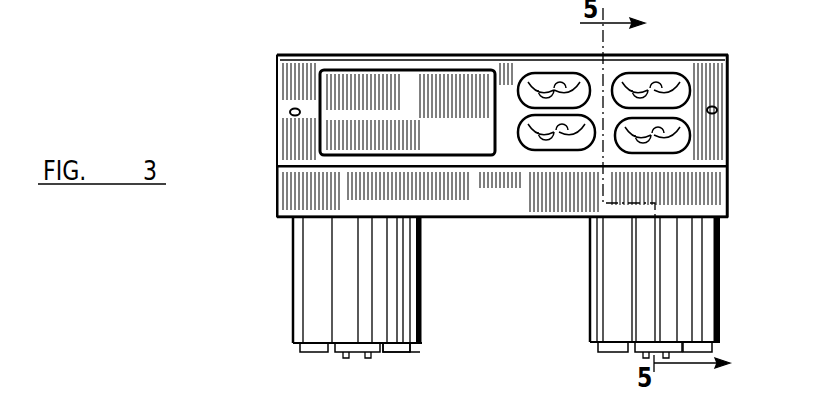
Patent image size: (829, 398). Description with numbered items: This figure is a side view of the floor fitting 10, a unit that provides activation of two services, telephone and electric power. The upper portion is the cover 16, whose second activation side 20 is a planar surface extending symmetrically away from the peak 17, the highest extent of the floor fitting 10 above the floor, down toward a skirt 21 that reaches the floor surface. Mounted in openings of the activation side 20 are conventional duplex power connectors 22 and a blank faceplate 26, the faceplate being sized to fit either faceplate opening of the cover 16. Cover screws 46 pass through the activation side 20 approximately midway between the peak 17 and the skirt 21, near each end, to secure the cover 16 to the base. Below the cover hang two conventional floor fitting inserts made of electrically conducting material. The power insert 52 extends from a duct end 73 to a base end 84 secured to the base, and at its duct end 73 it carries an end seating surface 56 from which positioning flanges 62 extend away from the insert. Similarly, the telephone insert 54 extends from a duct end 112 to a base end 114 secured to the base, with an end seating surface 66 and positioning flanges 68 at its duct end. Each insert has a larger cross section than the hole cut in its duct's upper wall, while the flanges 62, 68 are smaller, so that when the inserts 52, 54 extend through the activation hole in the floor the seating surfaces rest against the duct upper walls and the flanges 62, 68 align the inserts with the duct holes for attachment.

The floor fitting 10 is at (332, 45).
The cover 16 is at (277, 70).
The peak 17 is at (663, 55).
The second activation side 20 is at (510, 72).
The skirt 21 is at (717, 190).
The duplex power connectors 22 is at (622, 76).
The blank faceplate 26 is at (413, 98).
The cover screws 46 is at (290, 112).
The power insert 52 is at (602, 240).
The telephone insert 54 is at (422, 277).
The end seating surface 56 is at (588, 347).
The positioning flanges 62 is at (617, 352).
The end seating surface 66 is at (417, 350).
The positioning flanges 68 is at (413, 355).
The duct end 73 is at (590, 333).
The base end 84 is at (720, 223).
The duct end 112 is at (292, 330).
The base end 114 is at (290, 233).